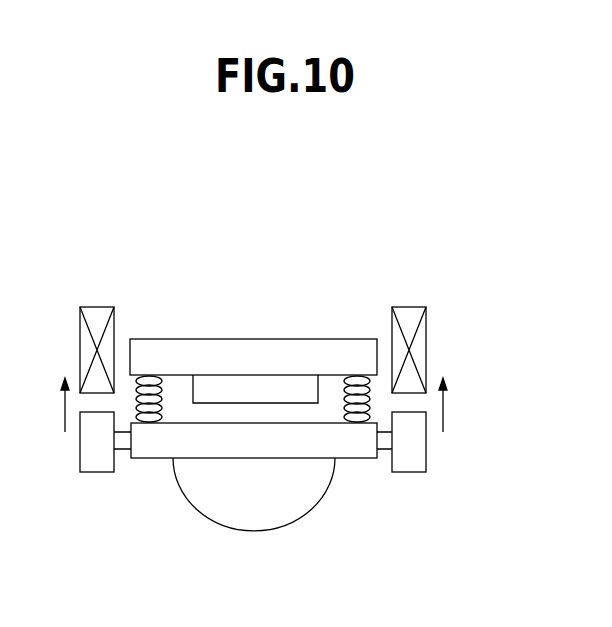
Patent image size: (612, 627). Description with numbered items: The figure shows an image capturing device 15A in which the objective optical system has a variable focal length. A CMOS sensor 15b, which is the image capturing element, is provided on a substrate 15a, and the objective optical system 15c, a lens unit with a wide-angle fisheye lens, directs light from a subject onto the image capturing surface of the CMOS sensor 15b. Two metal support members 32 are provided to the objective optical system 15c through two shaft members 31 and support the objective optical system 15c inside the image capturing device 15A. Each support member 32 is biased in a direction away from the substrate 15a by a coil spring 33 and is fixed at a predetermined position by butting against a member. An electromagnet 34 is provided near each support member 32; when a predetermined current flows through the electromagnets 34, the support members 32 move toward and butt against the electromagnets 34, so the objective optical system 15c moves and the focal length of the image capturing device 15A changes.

The image capturing device 15A is at (487, 312).
The substrate 15a is at (290, 345).
The CMOS sensor 15b is at (225, 388).
The objective optical system 15c is at (283, 494).
The shaft member 31 is at (122, 447).
The support member 32 is at (97, 462).
The coil spring 33 is at (160, 378).
The electromagnet 34 is at (97, 313).